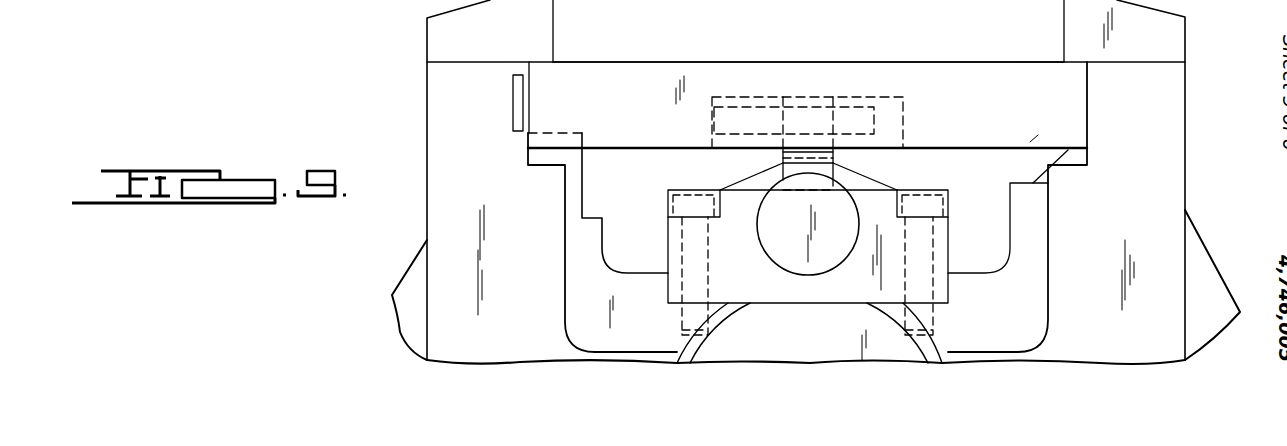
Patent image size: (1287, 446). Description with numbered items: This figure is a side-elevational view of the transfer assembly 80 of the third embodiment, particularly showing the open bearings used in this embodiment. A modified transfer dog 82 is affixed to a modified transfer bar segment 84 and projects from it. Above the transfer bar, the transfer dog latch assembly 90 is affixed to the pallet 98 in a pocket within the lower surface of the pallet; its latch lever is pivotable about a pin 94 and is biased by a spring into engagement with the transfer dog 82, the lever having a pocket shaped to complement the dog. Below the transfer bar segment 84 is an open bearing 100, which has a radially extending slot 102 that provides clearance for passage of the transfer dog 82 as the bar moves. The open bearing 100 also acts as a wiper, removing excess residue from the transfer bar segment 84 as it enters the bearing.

The transfer assembly 80 is at (1214, 82).
The transfer dog 82 is at (838, 154).
The transfer bar segment 84 is at (778, 263).
The transfer dog latch assembly 90 is at (880, 97).
The pin 94 is at (752, 110).
The pallet 98 is at (634, 62).
The open bearing 100 is at (795, 300).
The radial extending slot 102 is at (780, 164).